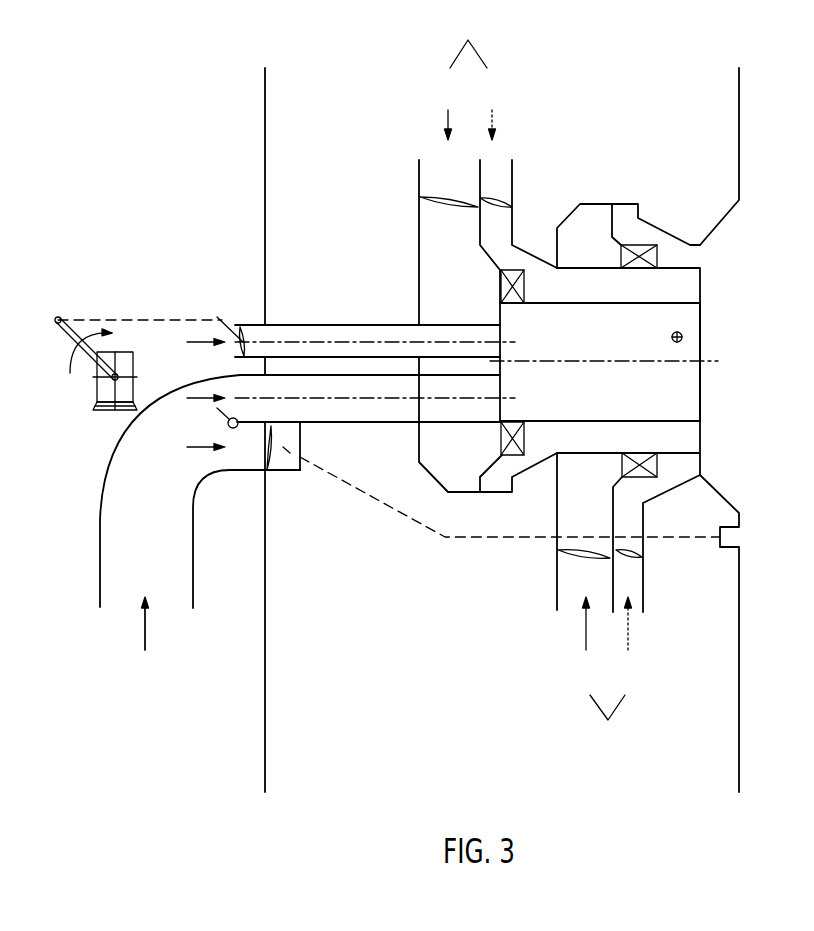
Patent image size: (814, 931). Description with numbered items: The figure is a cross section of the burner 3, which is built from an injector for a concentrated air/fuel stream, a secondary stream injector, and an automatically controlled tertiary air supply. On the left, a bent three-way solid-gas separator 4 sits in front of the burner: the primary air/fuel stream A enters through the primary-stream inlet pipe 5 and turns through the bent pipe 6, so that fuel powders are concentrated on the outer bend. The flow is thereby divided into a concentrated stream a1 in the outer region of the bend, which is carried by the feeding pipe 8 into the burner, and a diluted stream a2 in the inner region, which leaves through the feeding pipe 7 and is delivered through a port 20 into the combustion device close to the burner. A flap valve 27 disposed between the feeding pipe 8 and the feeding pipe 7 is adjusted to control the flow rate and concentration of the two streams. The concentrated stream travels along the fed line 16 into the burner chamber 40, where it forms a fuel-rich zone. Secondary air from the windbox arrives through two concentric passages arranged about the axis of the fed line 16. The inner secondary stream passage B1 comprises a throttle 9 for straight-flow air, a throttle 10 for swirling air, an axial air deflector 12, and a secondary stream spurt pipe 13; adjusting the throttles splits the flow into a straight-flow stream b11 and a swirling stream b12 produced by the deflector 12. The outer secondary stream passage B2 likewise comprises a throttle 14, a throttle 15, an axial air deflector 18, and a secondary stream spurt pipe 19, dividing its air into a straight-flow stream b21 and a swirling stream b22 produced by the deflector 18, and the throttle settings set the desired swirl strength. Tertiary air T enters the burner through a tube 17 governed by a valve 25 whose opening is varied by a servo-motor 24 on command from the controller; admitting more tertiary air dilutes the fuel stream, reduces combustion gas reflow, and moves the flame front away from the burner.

The burner 3 is at (227, 265).
The solid-gas separator 4 is at (130, 455).
The primary-stream inlet pipe 5 is at (100, 580).
The bent pipe 6 is at (212, 480).
The feeding pipe for diluted stream 7 is at (275, 470).
The feeding pipe for concentrated stream 8 is at (385, 423).
The throttle for straight-flow secondary stream 9 is at (505, 202).
The throttle for swirling-flow secondary stream 10 is at (432, 197).
The air deflector 12 is at (520, 268).
The secondary stream spurt pipe 13 is at (678, 270).
The throttle for straight-flow secondary stream 14 is at (630, 557).
The throttle for swirling-flow secondary stream 15 is at (573, 557).
The fed line of the concentrated stream 16 is at (660, 421).
The tube 17 is at (377, 323).
The air deflector 18 is at (680, 240).
The secondary stream spurt pipe 19 is at (703, 247).
The port 20 is at (741, 578).
The servo-motor 24 is at (72, 320).
The valve 25 is at (258, 324).
The flap valve 27 is at (225, 425).
The burner chamber 40 is at (682, 337).
The primary air/fuel stream A is at (145, 650).
The tertiary air T is at (193, 340).
The concentrated air/fuel stream a1 is at (191, 399).
The diluted fuel stream a2 is at (191, 449).
The inner secondary stream passage B1 is at (468, 37).
The straight-flow air stream b11 is at (492, 108).
The swirling flow air stream b12 is at (448, 108).
The outer secondary stream passage B2 is at (607, 732).
The straight-flow air stream b21 is at (628, 645).
The swirling flow stream b22 is at (586, 645).